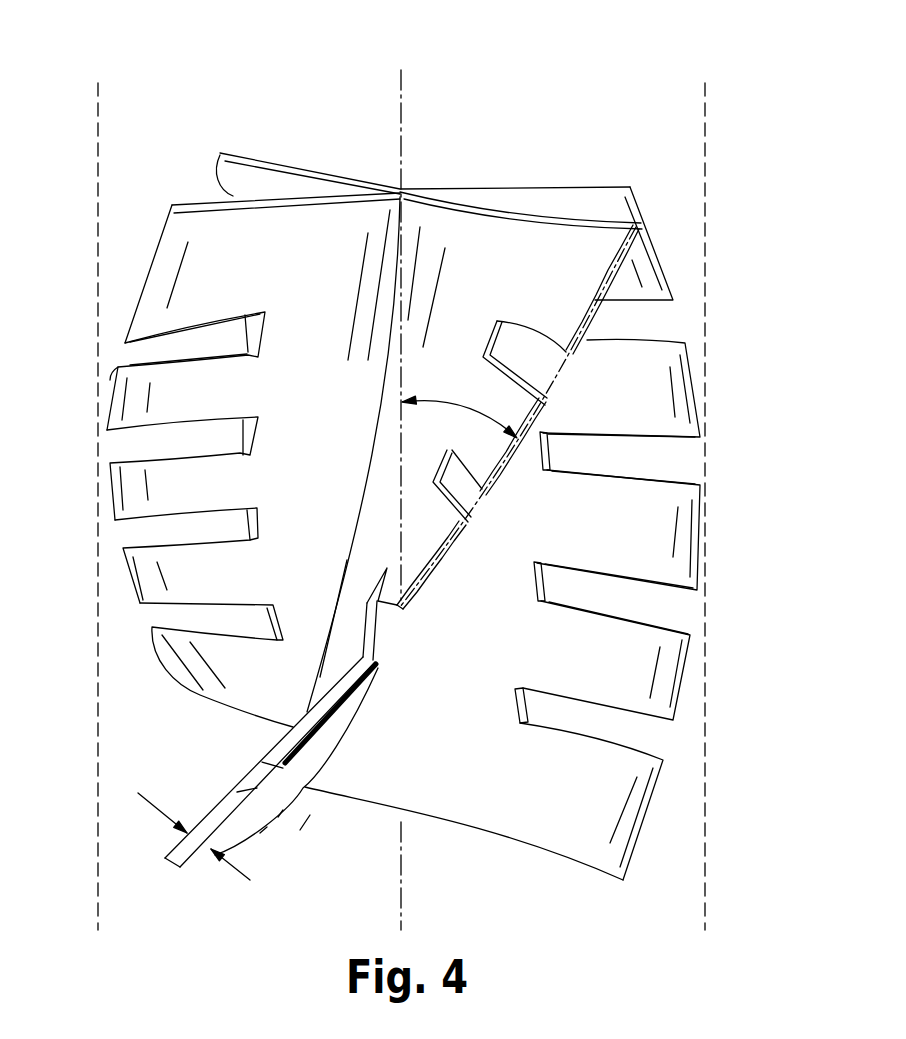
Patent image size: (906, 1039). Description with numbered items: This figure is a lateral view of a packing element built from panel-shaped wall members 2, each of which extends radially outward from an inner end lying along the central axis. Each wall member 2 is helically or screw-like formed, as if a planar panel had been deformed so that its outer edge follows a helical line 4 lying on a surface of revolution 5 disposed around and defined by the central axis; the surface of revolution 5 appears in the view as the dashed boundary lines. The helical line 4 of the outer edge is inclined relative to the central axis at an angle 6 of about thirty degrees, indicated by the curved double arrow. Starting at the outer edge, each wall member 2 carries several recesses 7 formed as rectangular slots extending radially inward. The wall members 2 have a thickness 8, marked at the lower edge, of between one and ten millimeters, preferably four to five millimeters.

The wall member 2 is at (258, 197).
The helical line 4 is at (597, 327).
The surface of revolution 5 is at (98, 113).
The angle 6 is at (467, 405).
The recess 7 is at (183, 342).
The thickness 8 is at (222, 862).